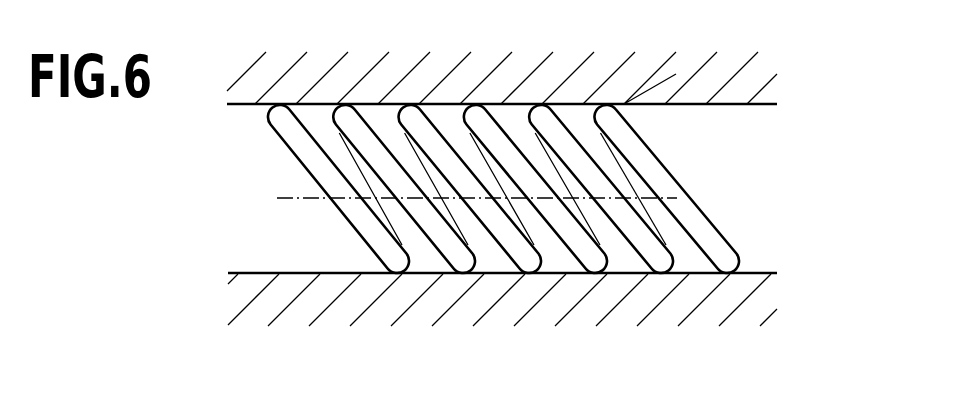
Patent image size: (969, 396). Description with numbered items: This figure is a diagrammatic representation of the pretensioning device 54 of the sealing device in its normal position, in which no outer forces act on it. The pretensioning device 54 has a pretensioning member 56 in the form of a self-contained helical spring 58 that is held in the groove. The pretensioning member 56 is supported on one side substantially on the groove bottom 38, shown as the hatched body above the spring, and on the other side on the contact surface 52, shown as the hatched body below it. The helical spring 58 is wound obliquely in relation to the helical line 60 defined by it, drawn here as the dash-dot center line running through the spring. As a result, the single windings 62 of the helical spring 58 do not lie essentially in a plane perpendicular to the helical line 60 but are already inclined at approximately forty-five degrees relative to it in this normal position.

The groove bottom 38 is at (243, 105).
The contact surface 52 is at (758, 273).
The pretensioning device 54 is at (565, 189).
The pretensioning member 56 is at (349, 229).
The helical spring 58 is at (642, 150).
The helical line 60 is at (420, 198).
The windings 62 is at (693, 220).